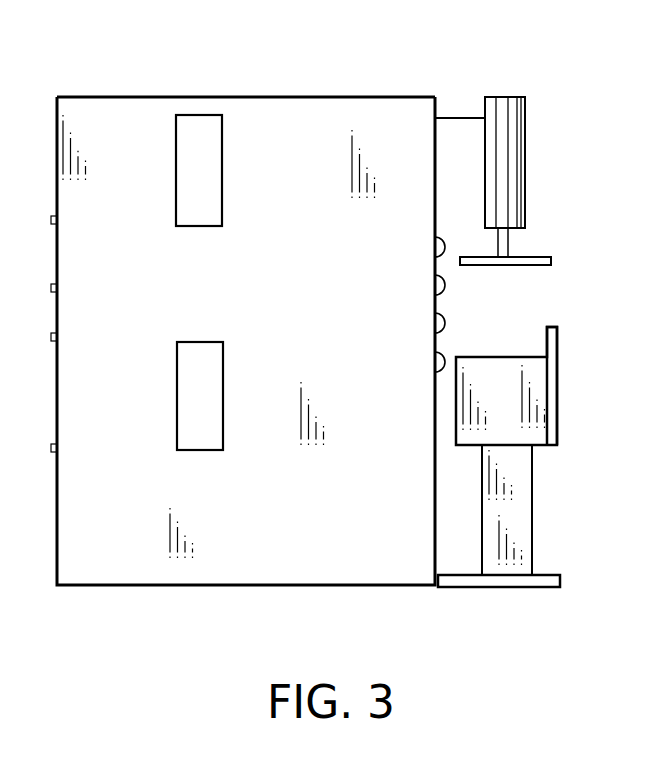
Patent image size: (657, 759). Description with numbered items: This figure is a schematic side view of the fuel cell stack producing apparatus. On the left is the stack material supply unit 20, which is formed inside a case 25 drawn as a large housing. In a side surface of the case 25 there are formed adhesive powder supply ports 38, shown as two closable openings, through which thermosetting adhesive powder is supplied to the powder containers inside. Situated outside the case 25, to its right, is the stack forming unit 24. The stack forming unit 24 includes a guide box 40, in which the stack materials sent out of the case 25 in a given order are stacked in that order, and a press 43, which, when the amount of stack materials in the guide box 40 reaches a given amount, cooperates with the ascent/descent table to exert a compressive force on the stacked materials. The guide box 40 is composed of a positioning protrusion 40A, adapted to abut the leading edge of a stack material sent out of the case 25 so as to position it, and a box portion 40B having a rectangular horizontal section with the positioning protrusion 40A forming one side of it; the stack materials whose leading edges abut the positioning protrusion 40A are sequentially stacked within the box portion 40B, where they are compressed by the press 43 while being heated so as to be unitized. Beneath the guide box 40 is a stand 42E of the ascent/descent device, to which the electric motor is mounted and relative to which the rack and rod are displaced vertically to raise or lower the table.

The stack material supply unit 20 is at (63, 89).
The case 25 is at (151, 100).
The adhesive powder supply ports 38 is at (207, 200).
The stack forming unit 24 is at (544, 136).
The press 43 is at (539, 222).
The guide box 40 is at (504, 338).
The positioning protrusion 40A is at (556, 338).
The box portion 40B is at (546, 395).
The stand 42E is at (516, 498).